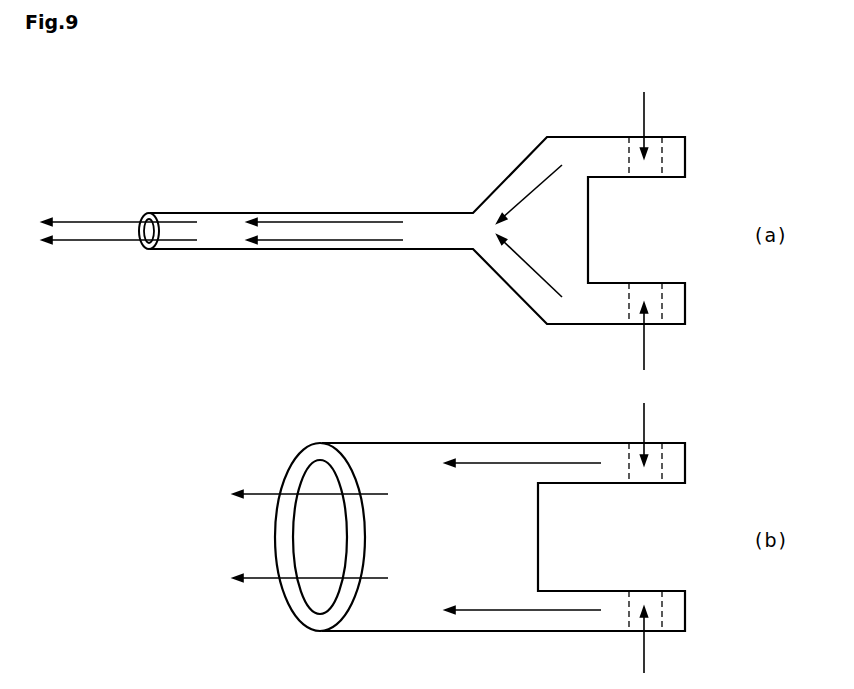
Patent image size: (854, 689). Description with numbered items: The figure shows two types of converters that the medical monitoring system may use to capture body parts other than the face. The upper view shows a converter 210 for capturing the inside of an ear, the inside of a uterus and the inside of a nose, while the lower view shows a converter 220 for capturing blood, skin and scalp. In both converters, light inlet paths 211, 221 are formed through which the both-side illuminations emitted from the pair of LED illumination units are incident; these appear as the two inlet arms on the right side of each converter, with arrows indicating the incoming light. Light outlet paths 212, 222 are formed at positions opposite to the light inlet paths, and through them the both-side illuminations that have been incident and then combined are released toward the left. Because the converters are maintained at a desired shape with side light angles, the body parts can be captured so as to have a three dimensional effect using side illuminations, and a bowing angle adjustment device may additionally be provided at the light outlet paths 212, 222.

The converter 210 is at (701, 137).
The light inlet path 211 is at (662, 155).
The light outlet path 212 is at (152, 244).
The converter 220 is at (700, 443).
The light inlet path 221 is at (658, 466).
The light outlet path 222 is at (323, 607).